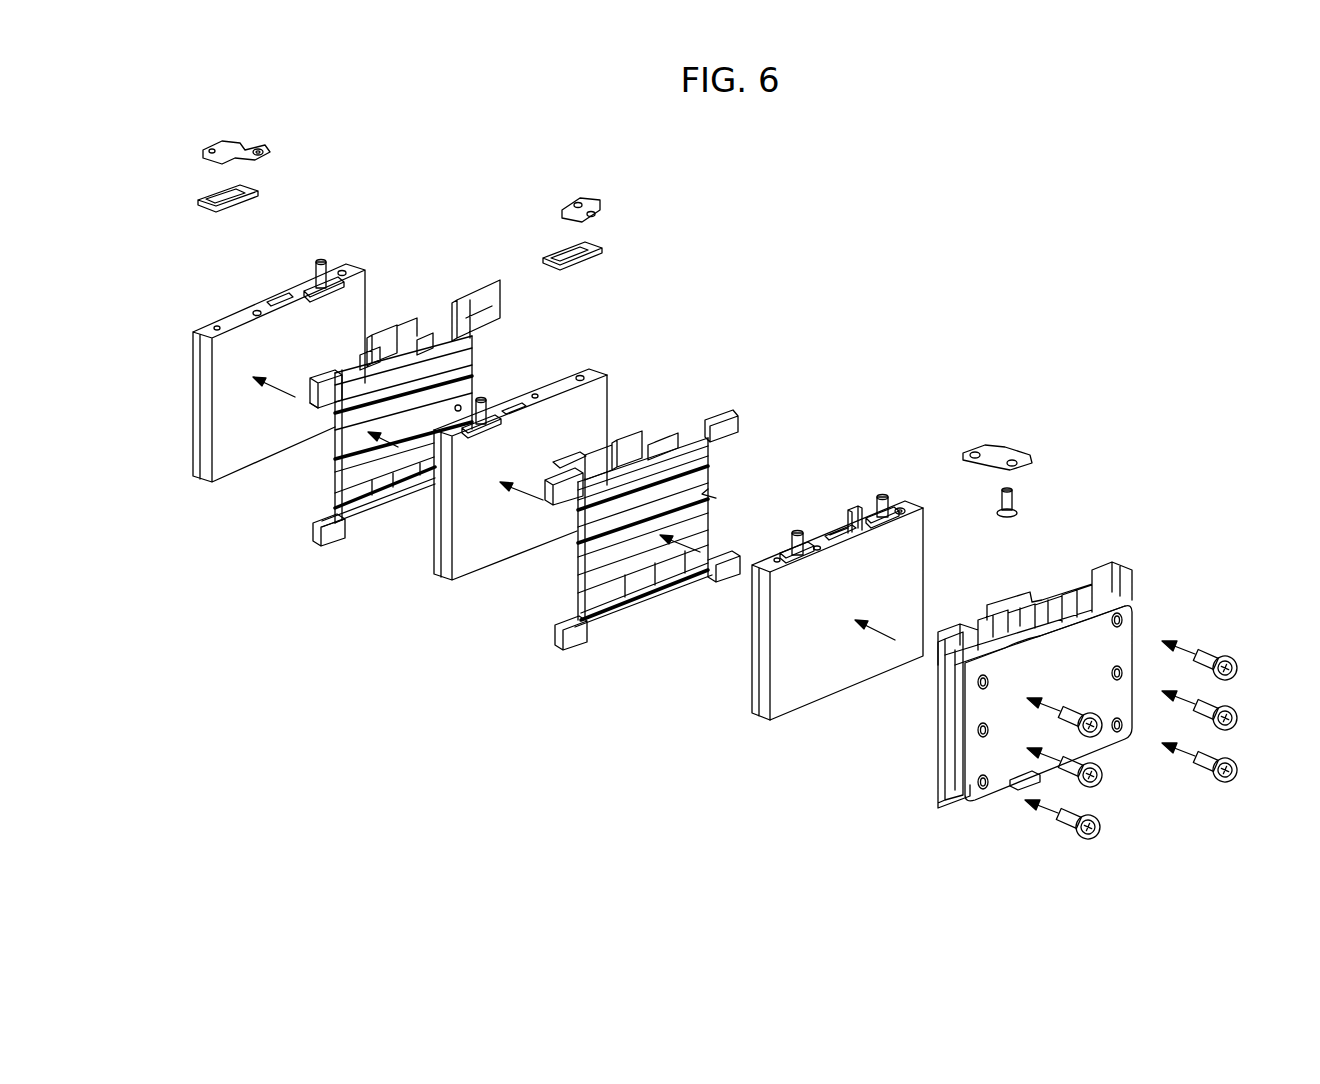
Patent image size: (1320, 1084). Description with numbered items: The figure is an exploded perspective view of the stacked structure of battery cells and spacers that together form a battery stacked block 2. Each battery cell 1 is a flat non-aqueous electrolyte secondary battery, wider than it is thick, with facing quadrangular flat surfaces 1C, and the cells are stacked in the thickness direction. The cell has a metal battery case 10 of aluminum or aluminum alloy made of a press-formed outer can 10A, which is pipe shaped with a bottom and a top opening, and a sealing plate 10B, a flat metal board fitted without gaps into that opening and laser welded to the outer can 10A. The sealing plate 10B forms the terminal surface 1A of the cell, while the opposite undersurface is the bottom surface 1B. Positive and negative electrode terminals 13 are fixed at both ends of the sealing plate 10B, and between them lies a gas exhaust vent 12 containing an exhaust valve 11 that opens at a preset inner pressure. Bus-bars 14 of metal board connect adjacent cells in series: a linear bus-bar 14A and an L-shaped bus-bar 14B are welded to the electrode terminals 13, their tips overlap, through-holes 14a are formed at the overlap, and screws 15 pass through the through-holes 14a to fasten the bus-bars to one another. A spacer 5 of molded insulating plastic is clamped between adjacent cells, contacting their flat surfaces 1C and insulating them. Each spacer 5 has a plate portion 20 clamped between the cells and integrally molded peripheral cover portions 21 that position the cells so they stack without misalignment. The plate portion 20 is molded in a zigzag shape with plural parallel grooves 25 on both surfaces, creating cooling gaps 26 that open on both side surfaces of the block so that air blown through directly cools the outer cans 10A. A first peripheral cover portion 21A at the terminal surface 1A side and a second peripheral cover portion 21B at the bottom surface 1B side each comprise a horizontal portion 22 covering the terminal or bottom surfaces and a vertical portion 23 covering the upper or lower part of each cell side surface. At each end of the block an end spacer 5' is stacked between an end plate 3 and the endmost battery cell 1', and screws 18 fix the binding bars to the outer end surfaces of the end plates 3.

The battery cell 1 is at (317, 399).
The endmost stacked battery cell 1' is at (783, 627).
The terminal surface 1A is at (556, 390).
The bottom surface 1B is at (830, 718).
The flat surface 1C is at (848, 648).
The battery stacked block 2 is at (739, 318).
The end plate 3 is at (1090, 667).
The spacer 5 is at (420, 624).
The end spacer 5' is at (989, 699).
The battery case 10 is at (692, 330).
The outer can 10A is at (598, 412).
The sealing plate 10B is at (598, 382).
The exhaust valve 11 is at (822, 538).
The gas exhaust vent 12 is at (848, 526).
The electrode terminal 13 is at (582, 370).
The bus-bar 14 is at (641, 327).
The linear bus-bar 14A is at (920, 500).
The L-shaped bus-bar 14B is at (277, 143).
The through-hole 14a is at (264, 148).
The screw 15 is at (484, 405).
The screw 18 is at (1232, 658).
The plate portion 20 is at (368, 535).
The peripheral cover portion 21 is at (407, 593).
The first peripheral cover portion 21A is at (470, 583).
The second peripheral cover portion 21B is at (470, 657).
The horizontal portion 22 is at (577, 513).
The vertical portion 23 is at (570, 505).
The groove 25 is at (328, 448).
The cooling gap 26 is at (511, 534).